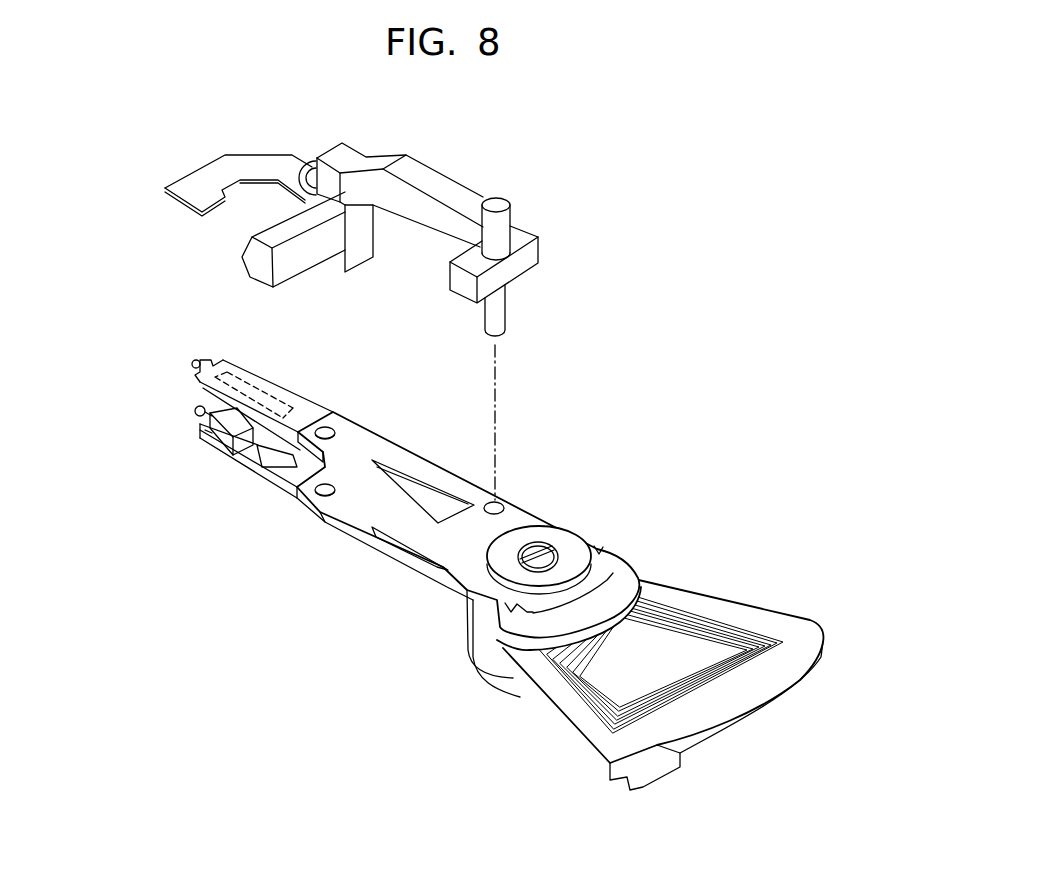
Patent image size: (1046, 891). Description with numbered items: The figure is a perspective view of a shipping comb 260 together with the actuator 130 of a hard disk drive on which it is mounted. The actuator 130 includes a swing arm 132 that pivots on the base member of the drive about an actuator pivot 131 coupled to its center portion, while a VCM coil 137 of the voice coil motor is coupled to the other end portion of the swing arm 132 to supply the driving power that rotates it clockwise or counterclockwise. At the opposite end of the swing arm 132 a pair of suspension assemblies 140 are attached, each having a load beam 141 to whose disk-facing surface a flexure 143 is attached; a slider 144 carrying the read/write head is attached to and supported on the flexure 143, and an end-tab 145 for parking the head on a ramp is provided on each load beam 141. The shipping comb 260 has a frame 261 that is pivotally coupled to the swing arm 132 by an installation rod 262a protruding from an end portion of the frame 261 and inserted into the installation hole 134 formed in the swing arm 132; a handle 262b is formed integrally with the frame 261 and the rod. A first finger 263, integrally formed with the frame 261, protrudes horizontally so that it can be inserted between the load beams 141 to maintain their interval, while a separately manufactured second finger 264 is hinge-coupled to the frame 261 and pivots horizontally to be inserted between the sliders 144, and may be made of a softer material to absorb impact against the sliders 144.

The actuator 130 is at (560, 567).
The actuator pivot 131 is at (553, 550).
The swing arm 132 is at (447, 572).
The installation hole 134 is at (498, 507).
The VCM coil 137 is at (710, 628).
The suspension assembly 140 is at (200, 441).
The load beam 141 is at (253, 380).
The flexure 143 is at (203, 387).
The slider 144 is at (207, 432).
The end-tab 145 is at (193, 358).
The shipping comb 260 is at (380, 220).
The frame 261 is at (418, 173).
The installation rod 262a is at (508, 311).
The handle 262b is at (503, 226).
The first finger 263 is at (300, 262).
The second finger 264 is at (198, 190).